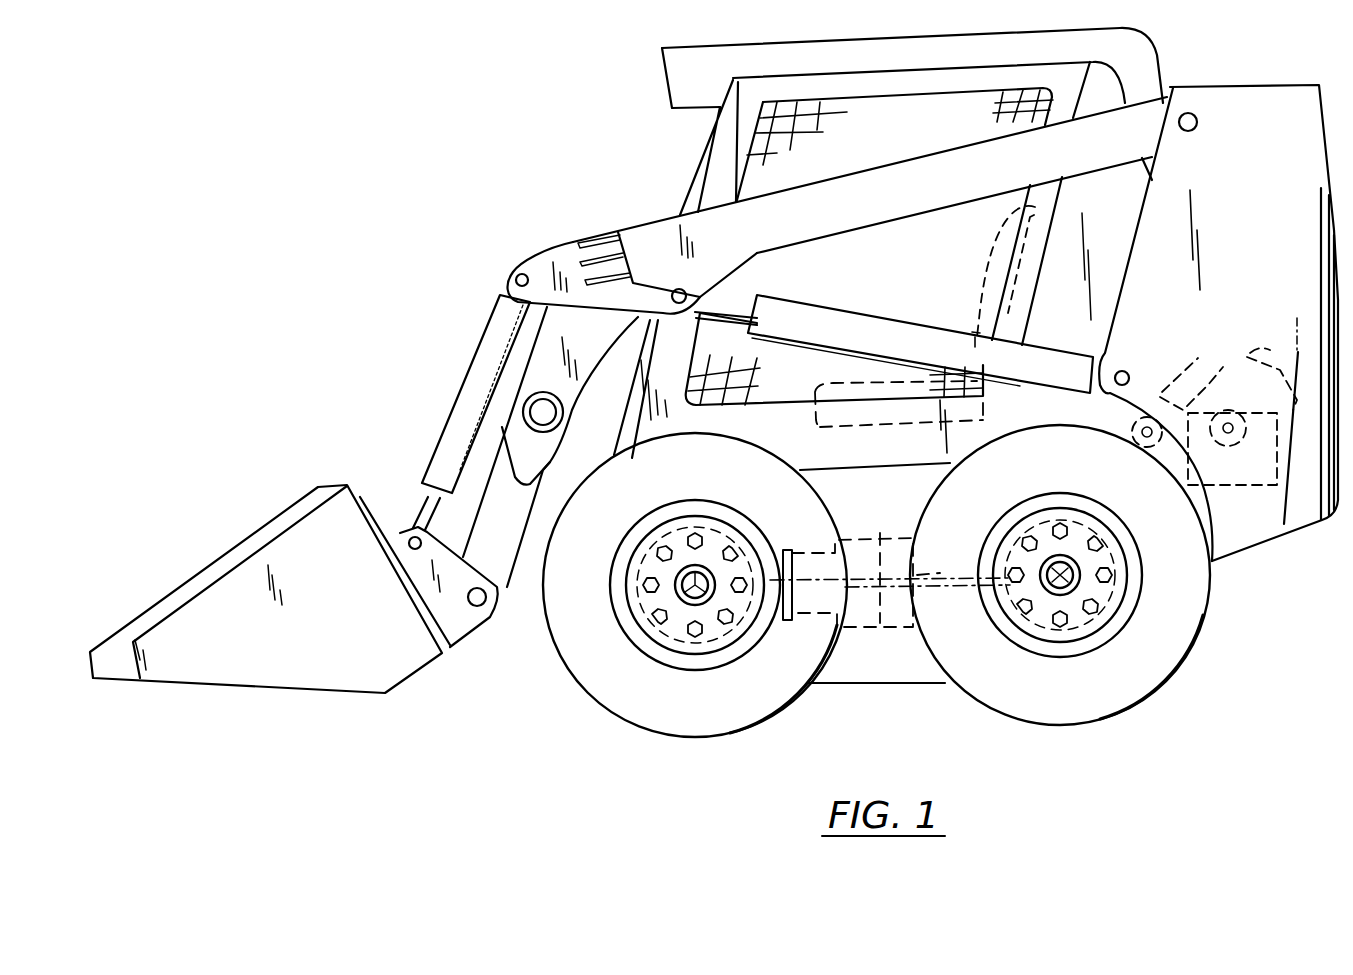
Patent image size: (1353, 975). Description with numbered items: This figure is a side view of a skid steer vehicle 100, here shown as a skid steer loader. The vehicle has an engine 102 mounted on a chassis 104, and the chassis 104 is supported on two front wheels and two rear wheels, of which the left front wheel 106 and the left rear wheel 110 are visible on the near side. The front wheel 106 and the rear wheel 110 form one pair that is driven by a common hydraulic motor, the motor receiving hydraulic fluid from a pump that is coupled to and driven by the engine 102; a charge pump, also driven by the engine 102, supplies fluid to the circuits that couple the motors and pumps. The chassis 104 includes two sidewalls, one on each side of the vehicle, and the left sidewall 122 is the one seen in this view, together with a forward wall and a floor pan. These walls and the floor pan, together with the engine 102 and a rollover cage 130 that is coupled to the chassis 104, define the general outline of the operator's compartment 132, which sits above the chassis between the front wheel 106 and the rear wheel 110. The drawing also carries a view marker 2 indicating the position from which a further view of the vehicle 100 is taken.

The skid steer vehicle 100 is at (454, 100).
The engine 102 is at (1217, 363).
The chassis 104 is at (900, 683).
The front wheel 106 is at (553, 648).
The rear wheel 110 is at (1212, 583).
The sidewall 122 is at (892, 514).
The rollover cage 130 is at (699, 150).
The operator's compartment 132 is at (900, 155).
The section view indicator 2 is at (582, 445).